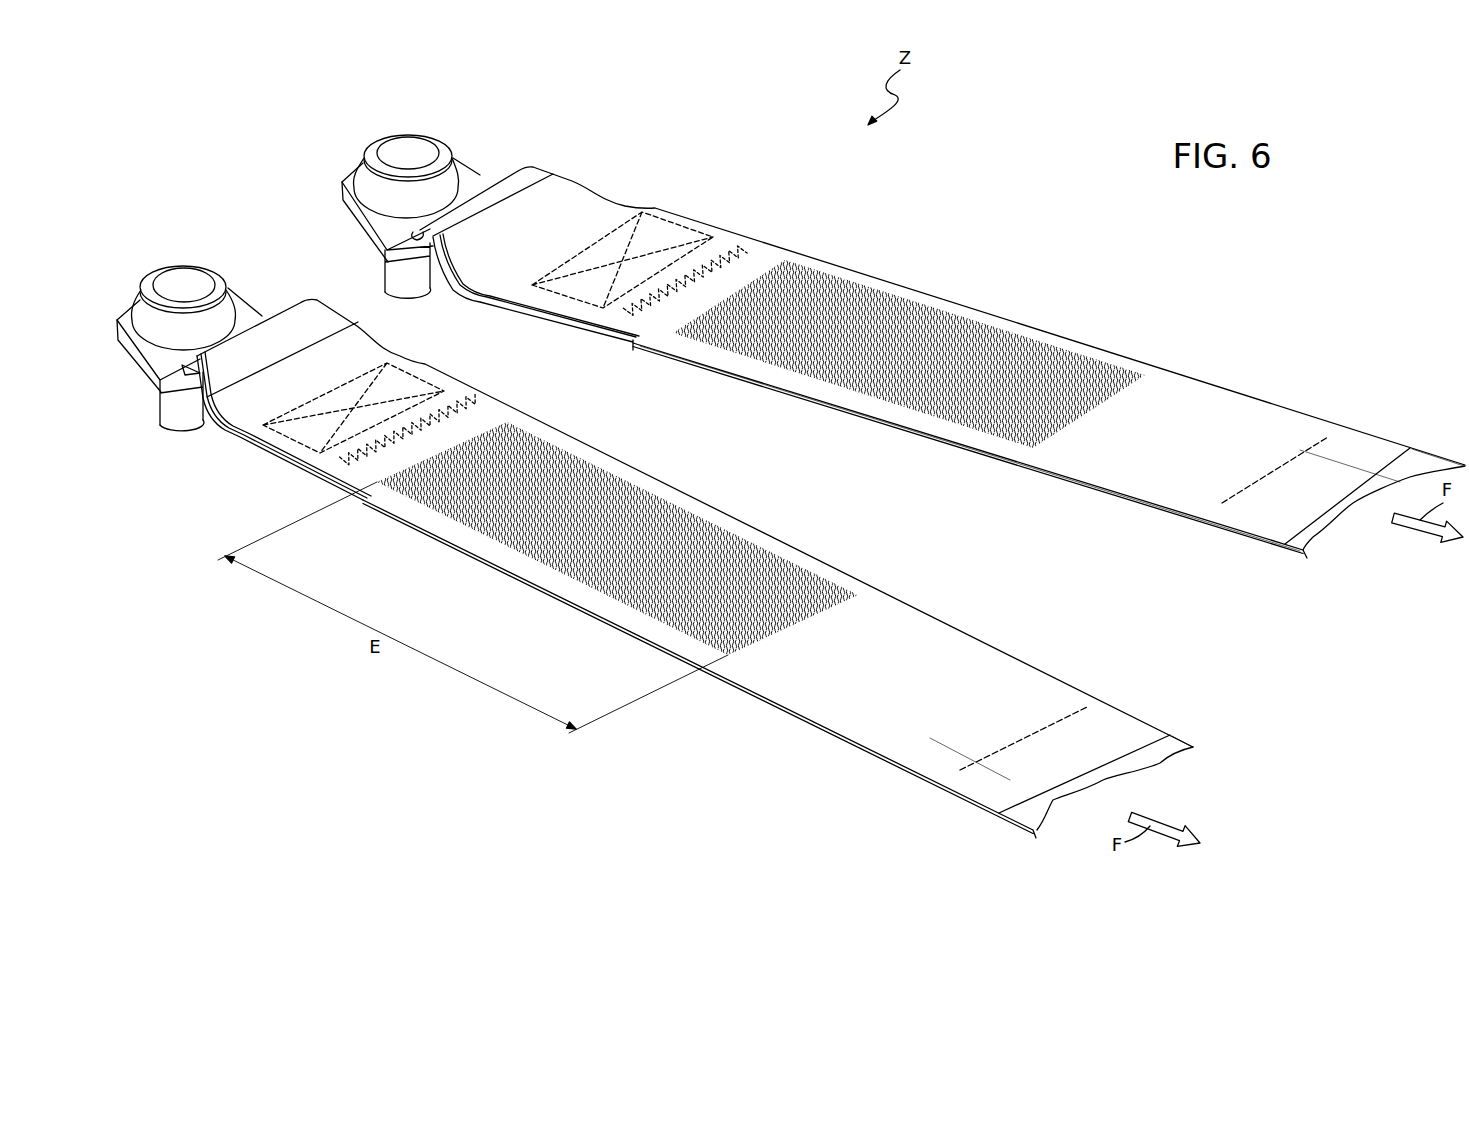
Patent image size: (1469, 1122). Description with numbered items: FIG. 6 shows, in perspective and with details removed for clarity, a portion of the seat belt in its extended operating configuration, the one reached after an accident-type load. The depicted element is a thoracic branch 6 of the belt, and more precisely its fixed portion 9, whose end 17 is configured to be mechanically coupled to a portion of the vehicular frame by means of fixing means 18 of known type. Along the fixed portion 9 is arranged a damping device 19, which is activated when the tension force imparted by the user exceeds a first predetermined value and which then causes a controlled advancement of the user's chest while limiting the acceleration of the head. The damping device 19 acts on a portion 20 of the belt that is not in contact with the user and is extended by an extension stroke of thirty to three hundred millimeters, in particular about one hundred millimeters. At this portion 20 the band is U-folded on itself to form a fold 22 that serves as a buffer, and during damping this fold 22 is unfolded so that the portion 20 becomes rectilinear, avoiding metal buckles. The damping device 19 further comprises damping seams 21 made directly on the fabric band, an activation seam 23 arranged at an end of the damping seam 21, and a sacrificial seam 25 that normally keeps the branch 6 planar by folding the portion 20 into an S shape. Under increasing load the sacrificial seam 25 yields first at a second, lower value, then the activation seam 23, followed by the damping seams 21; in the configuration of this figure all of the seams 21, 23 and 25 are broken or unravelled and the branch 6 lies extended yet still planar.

The thoracic branch 6 is at (1360, 414).
The fixed portion 9 is at (1300, 427).
The end 17 is at (480, 181).
The fixing means 18 is at (385, 127).
The damping device 19 is at (820, 414).
The portion of the seat belt 20 is at (789, 222).
The damping seam 21 is at (913, 300).
The fold 22 is at (857, 400).
The activation seam 23 is at (698, 312).
The sacrificial seam 25 is at (1280, 455).